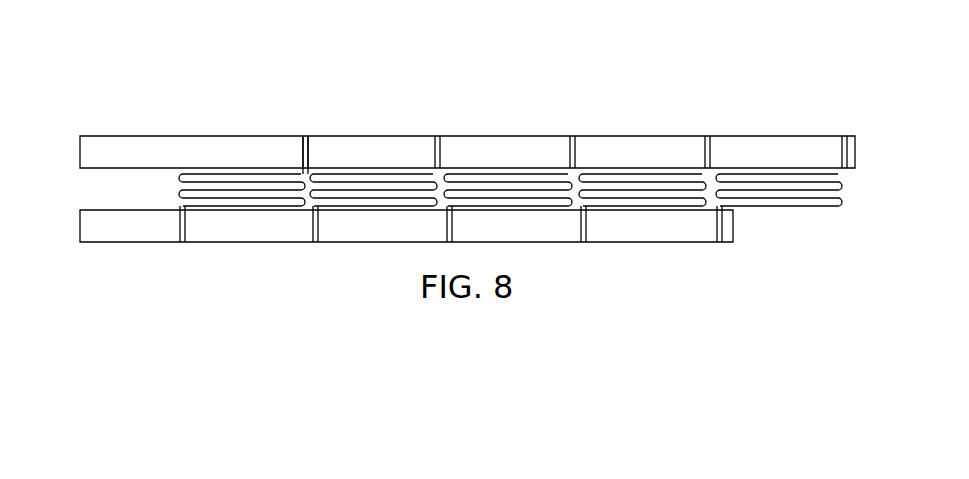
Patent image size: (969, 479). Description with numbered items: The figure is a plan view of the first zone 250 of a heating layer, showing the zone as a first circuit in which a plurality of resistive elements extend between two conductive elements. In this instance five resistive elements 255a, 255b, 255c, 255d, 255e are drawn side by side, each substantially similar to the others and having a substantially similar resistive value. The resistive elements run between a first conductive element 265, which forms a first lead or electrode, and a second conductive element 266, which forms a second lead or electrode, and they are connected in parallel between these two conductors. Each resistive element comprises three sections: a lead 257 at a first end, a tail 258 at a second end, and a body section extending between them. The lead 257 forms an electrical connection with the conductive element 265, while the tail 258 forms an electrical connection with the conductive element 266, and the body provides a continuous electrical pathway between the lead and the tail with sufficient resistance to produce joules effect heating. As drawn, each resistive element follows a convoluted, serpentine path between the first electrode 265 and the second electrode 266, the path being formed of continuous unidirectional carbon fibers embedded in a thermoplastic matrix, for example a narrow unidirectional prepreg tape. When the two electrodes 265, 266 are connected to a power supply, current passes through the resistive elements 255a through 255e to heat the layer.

The first zone 250 is at (457, 166).
The conductive element 266 is at (95, 136).
The conductive element 265 is at (131, 242).
The lead 257 is at (187, 226).
The tail 258 is at (303, 150).
The resistive element 255a is at (223, 176).
The resistive element 255b is at (397, 177).
The resistive element 255c is at (510, 177).
The resistive element 255d is at (630, 178).
The resistive element 255e is at (797, 210).